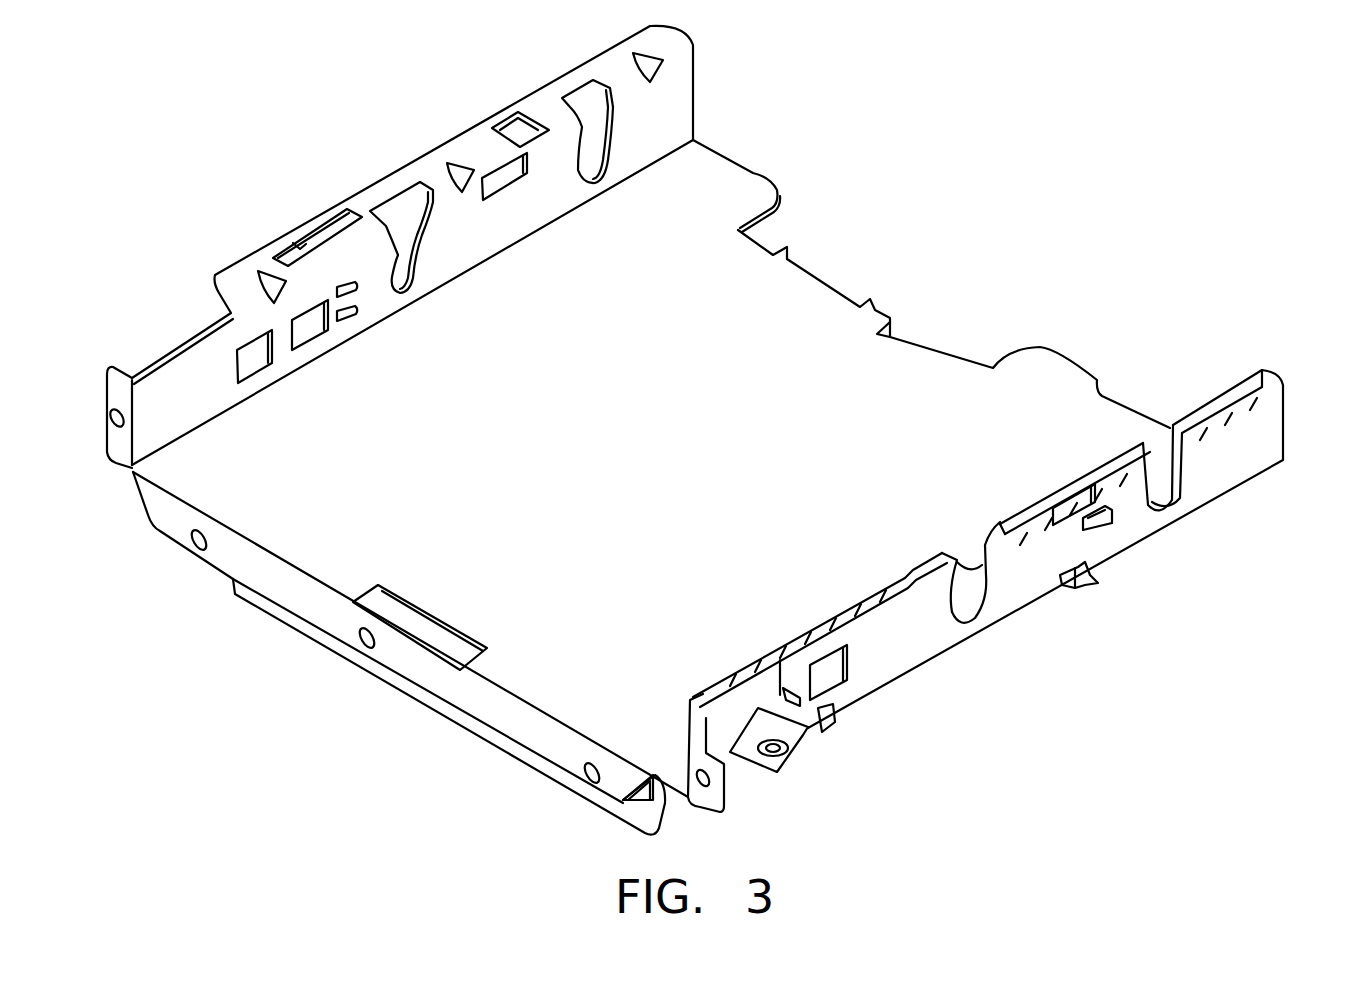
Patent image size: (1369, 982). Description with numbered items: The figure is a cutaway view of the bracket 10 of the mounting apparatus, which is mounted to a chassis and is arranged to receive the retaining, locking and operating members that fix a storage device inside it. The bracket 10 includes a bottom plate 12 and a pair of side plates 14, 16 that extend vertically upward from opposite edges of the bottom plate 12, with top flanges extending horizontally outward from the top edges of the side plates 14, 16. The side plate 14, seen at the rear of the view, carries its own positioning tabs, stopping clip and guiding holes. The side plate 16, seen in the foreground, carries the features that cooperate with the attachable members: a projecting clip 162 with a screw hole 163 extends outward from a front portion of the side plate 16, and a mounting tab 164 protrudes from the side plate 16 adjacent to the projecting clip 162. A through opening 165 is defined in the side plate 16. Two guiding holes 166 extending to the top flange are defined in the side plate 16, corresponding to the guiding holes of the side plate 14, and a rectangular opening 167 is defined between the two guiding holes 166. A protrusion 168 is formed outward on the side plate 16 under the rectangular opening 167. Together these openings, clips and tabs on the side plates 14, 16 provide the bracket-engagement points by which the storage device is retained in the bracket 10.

The bracket 10 is at (843, 260).
The bottom plate 12 is at (733, 190).
The side plate 14 is at (673, 105).
The side plate 16 is at (1258, 428).
The projecting clip 162 is at (783, 763).
The screw hole 163 is at (770, 756).
The mounting tab 164 is at (813, 722).
The through opening 165 is at (832, 676).
The guiding holes 166 is at (975, 597).
The rectangular opening 167 is at (1065, 522).
The protrusion 168 is at (1115, 523).